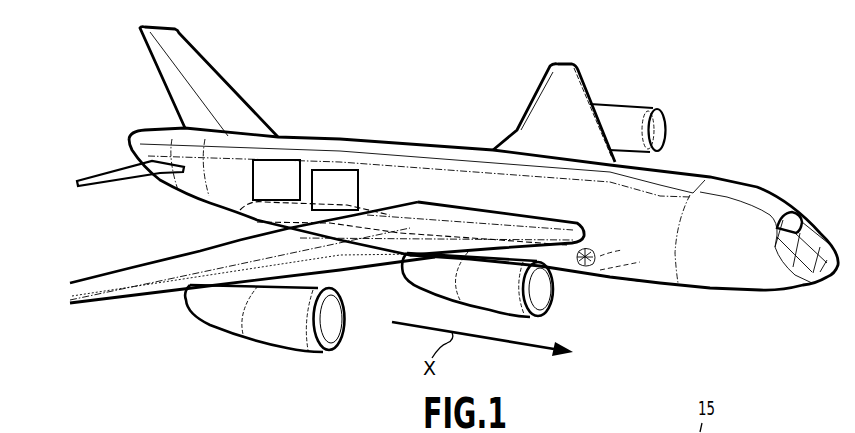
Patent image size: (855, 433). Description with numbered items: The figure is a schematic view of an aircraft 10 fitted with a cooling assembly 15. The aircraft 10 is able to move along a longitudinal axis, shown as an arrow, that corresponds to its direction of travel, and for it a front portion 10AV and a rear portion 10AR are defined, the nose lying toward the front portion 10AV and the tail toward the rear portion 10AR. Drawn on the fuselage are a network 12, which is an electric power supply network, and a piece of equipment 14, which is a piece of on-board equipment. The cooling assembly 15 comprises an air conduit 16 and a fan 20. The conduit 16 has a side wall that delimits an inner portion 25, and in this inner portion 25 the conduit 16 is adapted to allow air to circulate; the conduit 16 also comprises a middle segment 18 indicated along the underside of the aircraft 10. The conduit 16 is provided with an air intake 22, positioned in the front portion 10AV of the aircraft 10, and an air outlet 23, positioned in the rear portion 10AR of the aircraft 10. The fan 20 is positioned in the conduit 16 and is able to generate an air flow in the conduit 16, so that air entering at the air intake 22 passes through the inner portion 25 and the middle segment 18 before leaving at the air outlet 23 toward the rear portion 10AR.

The aircraft 10 is at (708, 106).
The rear portion 10AR is at (128, 122).
The front portion 10AV is at (768, 172).
The network 12 is at (276, 180).
The piece of equipment 14 is at (335, 190).
The cooling assembly 15 is at (606, 285).
The air conduit 16 is at (628, 266).
The middle segment 18 is at (388, 227).
The fan 20 is at (584, 263).
The air intake 22 is at (628, 284).
The air outlet 23 is at (236, 220).
The inner portion 25 is at (608, 254).